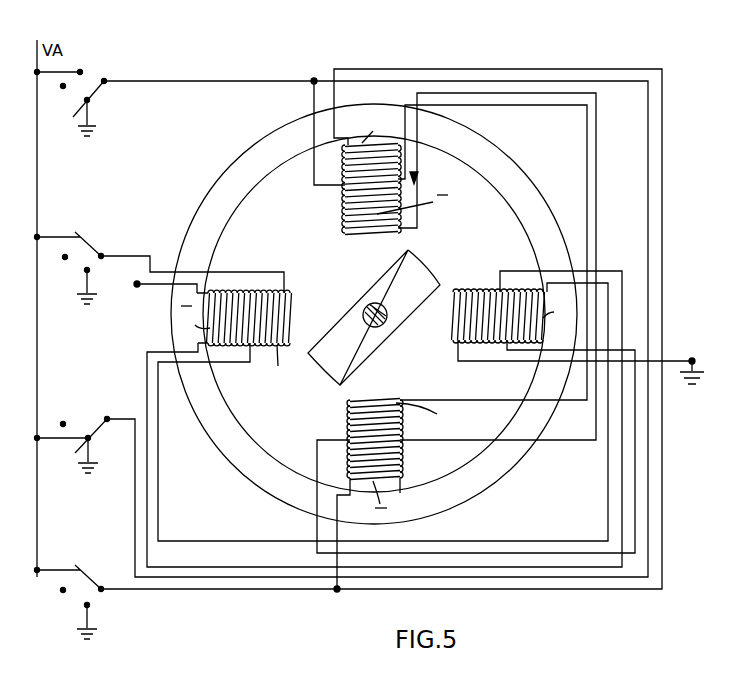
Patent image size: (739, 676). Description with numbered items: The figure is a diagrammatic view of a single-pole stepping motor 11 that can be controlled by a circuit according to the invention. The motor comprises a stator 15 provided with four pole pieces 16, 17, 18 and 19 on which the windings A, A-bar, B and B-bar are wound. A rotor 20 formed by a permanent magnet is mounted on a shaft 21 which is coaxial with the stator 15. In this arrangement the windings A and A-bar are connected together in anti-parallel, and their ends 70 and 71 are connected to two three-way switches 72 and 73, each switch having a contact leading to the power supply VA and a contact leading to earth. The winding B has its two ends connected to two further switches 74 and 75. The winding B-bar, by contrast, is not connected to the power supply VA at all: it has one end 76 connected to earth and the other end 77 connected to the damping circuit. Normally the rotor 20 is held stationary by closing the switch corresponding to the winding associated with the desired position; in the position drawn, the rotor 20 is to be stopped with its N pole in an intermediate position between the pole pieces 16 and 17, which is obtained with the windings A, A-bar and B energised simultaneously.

The stepping motor 11 is at (527, 152).
The stator 15 is at (488, 153).
The pole piece 16 is at (343, 186).
The pole piece 17 is at (502, 302).
The pole piece 18 is at (358, 441).
The pole piece 19 is at (248, 298).
The rotor 20 is at (333, 352).
The shaft 21 is at (383, 303).
The end of windings A and A-bar 70 is at (315, 79).
The end of windings A and A-bar 71 is at (336, 591).
The three-way switch 72 is at (99, 93).
The three-way switch 73 is at (98, 569).
The switch 74 is at (97, 239).
The switch 75 is at (96, 444).
The end of winding B-bar 76 is at (692, 358).
The end of winding B-bar 77 is at (137, 286).